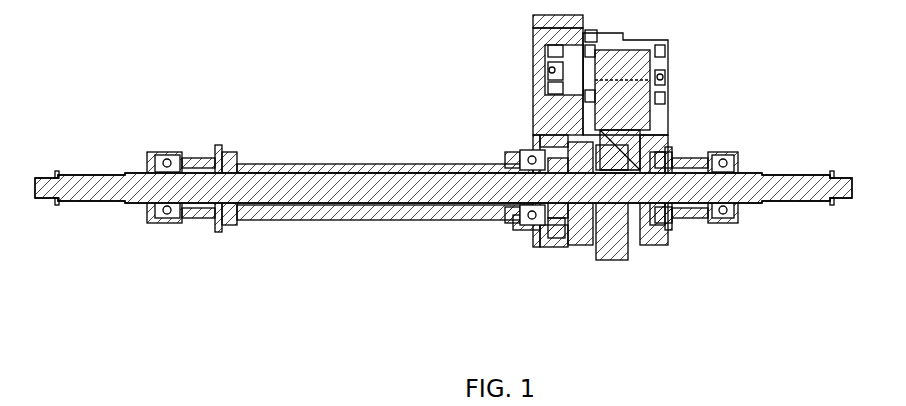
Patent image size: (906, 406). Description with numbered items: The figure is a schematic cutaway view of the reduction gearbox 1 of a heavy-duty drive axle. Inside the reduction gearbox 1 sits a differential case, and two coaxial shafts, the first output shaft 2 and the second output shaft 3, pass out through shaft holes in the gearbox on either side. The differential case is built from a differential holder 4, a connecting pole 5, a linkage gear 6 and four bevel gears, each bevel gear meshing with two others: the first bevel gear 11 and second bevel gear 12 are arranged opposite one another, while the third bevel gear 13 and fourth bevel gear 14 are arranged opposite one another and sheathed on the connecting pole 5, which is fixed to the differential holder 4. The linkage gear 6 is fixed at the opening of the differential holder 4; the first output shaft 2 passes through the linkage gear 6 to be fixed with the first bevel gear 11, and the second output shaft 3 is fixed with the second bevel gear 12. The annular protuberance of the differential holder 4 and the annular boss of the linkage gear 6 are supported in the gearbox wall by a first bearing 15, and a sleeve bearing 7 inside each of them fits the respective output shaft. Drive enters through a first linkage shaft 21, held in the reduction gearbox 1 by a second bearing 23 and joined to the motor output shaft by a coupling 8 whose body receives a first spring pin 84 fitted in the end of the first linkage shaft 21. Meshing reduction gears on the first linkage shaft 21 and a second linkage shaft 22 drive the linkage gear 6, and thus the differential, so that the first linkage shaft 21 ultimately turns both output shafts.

The reduction gearbox 1 is at (545, 247).
The first output shaft 2 is at (805, 193).
The second output shaft 3 is at (290, 190).
The differential holder 4 is at (556, 245).
The connecting pole 5 is at (583, 245).
The linkage gear 6 is at (615, 262).
The sleeve bearing 7 is at (641, 245).
The coupling 8 is at (535, 56).
The first spring pin 84 is at (535, 70).
The first bevel gear 11 is at (640, 157).
The second bevel gear 12 is at (515, 228).
The third bevel gear 13 is at (538, 157).
The fourth bevel gear 14 is at (556, 238).
The first bearing 15 is at (508, 158).
The first linkage shaft 21 is at (617, 70).
The second linkage shaft 22 is at (578, 112).
The second bearing 23 is at (598, 42).